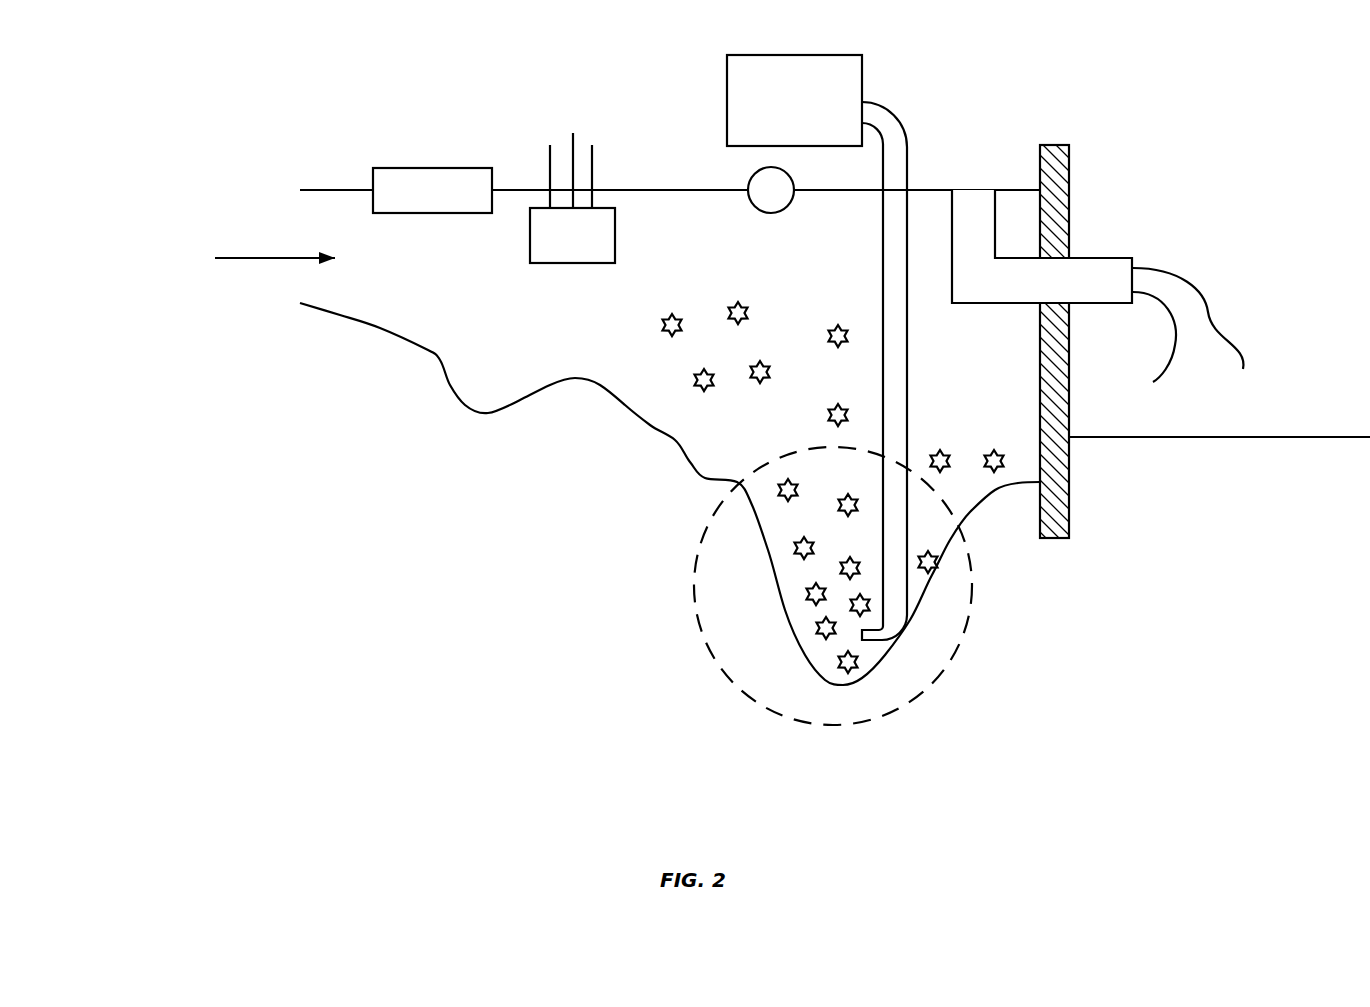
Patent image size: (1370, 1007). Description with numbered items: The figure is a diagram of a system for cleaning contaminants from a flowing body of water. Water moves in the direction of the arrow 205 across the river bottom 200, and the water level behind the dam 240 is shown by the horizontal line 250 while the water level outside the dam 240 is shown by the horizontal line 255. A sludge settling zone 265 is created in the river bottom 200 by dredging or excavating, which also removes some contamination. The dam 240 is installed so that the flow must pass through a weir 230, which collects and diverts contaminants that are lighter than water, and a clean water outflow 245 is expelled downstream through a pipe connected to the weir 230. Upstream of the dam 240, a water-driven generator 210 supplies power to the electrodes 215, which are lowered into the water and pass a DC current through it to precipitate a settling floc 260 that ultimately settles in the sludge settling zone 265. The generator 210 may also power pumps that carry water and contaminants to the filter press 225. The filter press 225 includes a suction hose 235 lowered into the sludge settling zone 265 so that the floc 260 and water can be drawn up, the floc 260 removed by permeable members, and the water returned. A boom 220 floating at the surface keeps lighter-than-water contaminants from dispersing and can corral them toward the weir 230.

The river bottom 200 is at (670, 494).
The water flow direction arrow 205 is at (229, 234).
The water-driven generator 210 is at (435, 167).
The electrode 215 is at (570, 262).
The boom 220 is at (770, 213).
The filter press 225 is at (794, 100).
The weir 230 is at (982, 305).
The suction hose 235 is at (910, 152).
The dam 240 is at (1070, 220).
The clean water outflow 245 is at (1212, 307).
The water level behind dam 250 is at (320, 187).
The water level outside dam 255 is at (1275, 438).
The settling floc 260 is at (700, 392).
The sludge settling zone 265 is at (940, 673).